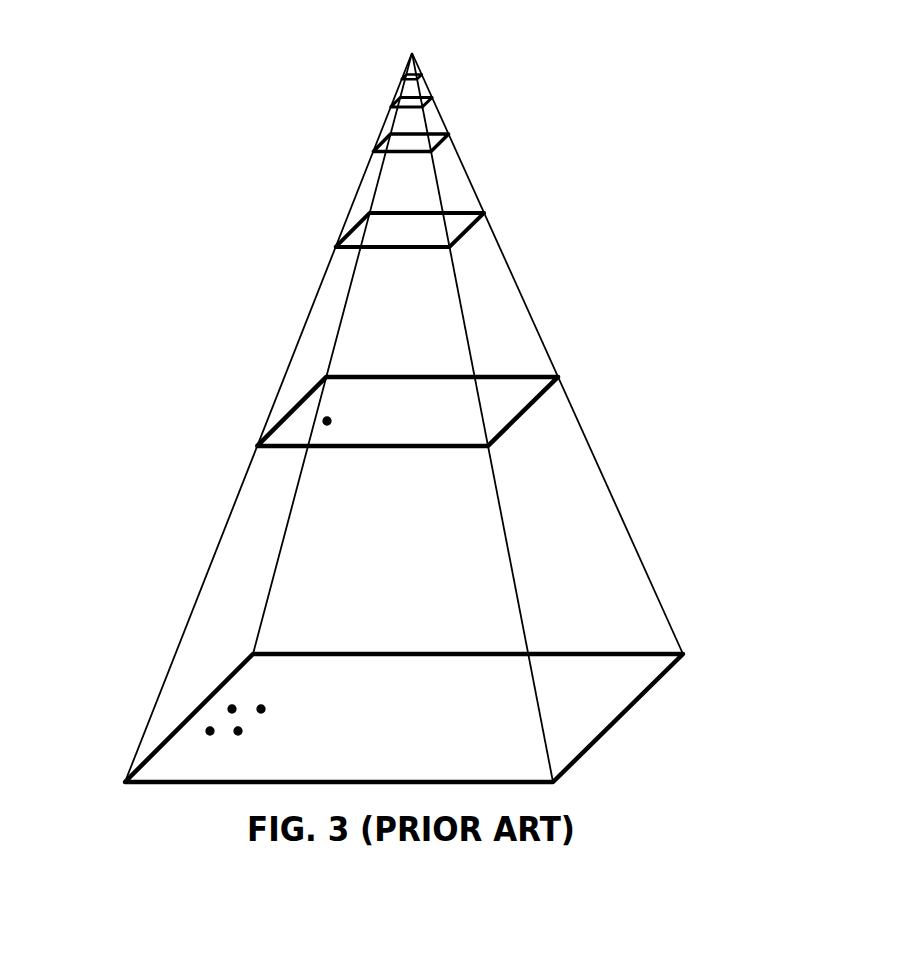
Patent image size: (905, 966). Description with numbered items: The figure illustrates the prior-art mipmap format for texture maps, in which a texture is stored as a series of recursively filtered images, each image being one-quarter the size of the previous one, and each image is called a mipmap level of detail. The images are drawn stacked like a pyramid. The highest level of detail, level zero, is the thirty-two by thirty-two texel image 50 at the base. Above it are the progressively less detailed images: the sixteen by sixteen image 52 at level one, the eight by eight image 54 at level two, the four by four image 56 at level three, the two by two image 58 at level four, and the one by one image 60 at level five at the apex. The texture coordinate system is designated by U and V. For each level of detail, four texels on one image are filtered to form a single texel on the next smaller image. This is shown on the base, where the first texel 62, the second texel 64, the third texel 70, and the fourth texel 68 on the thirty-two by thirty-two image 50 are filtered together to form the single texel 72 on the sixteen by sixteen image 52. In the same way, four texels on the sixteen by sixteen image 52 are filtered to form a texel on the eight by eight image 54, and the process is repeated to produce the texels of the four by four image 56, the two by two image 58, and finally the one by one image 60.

The 32×32 texel image 50 is at (683, 655).
The 16×16 image 52 is at (556, 377).
The 8×8 image 54 is at (482, 212).
The 4×4 image 56 is at (445, 133).
The 2×2 image 58 is at (418, 103).
The 1×1 image 60 is at (417, 77).
The texel (u1, v1) 62 is at (228, 709).
The texel (u2, v2) 64 is at (257, 708).
The texel (u4, v4) 68 is at (236, 734).
The texel (u3, v3) 70 is at (207, 734).
The texel (u', v') 72 is at (322, 422).